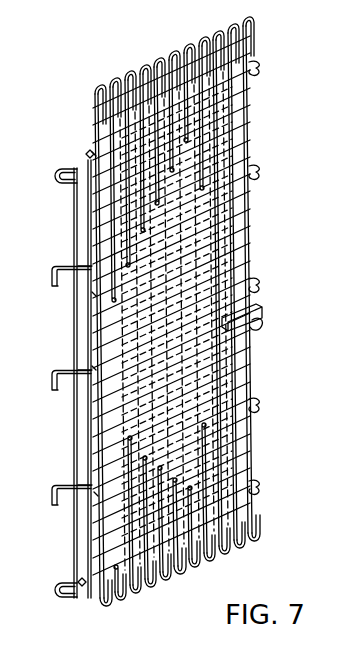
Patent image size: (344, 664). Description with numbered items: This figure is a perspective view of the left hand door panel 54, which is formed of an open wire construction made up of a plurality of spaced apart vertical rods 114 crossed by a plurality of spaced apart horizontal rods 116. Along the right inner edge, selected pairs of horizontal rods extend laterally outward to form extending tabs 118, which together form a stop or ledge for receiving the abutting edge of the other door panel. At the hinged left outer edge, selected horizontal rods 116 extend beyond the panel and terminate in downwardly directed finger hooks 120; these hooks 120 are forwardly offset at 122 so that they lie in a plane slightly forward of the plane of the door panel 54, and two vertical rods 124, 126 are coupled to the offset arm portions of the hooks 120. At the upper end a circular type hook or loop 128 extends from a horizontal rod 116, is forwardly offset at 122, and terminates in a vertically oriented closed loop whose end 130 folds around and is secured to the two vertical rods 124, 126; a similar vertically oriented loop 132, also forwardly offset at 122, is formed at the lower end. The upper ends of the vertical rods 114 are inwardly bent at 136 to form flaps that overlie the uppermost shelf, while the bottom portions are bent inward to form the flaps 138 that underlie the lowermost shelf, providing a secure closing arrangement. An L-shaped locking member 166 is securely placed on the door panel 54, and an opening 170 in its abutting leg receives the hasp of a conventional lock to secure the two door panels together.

The left hand door panel 54 is at (169, 316).
The vertical rods 114 is at (257, 267).
The horizontal rods 116 is at (212, 62).
The extending tabs 118 is at (258, 72).
The finger hooks 120 is at (55, 272).
The forward offset 122 is at (95, 155).
The vertical rod 124 is at (74, 203).
The vertical rod 126 is at (92, 224).
The circular hook or loop 128 is at (57, 172).
The loop end 130 is at (92, 156).
The lower hook or loop 132 is at (57, 582).
The inward bend or flaps 136 is at (142, 66).
The flaps 138 is at (153, 575).
The L-shaped locking member 166 is at (263, 328).
The opening 170 is at (264, 316).